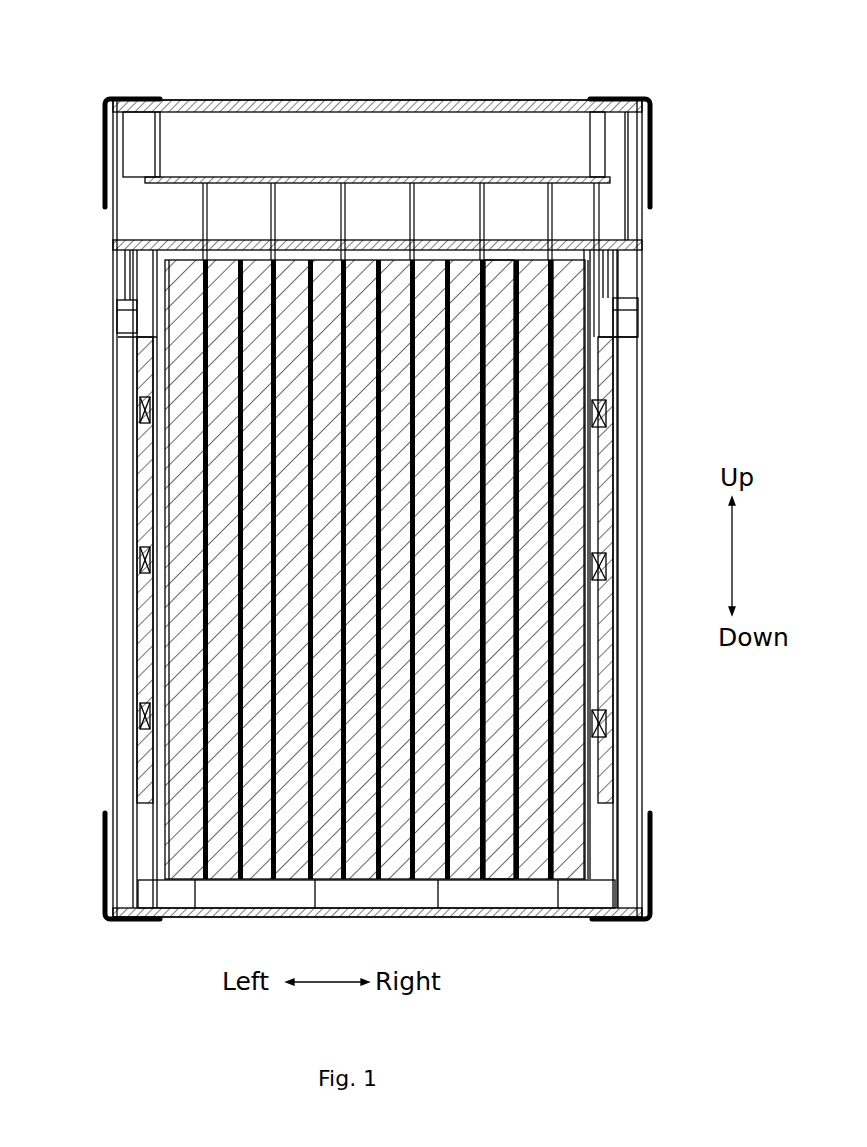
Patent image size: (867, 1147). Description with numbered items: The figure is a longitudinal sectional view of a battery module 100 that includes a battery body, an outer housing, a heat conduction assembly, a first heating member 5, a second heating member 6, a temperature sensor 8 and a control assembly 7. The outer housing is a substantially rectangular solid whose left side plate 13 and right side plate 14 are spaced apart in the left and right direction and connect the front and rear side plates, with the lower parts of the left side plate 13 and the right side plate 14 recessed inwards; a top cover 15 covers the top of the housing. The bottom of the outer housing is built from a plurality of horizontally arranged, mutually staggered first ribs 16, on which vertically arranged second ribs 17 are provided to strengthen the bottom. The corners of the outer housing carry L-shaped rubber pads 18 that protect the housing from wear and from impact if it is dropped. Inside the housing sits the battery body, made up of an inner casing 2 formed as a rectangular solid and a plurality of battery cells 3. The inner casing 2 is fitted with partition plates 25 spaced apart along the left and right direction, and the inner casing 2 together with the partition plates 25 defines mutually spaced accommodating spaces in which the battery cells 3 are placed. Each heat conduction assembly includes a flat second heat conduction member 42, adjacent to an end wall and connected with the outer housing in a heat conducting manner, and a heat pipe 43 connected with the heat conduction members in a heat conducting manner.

The battery module 100 is at (350, 29).
The top cover 15 is at (364, 106).
The control assembly 7 is at (437, 183).
The rubber pad 18 is at (108, 134).
The partition plate 25 is at (205, 388).
The battery cell 3 is at (188, 670).
The first heating member 5 is at (555, 272).
The temperature sensor 8 is at (497, 845).
The left side plate 13 is at (137, 497).
The second heating member 6 is at (148, 527).
The second heat conduction member 42 is at (138, 680).
The right side plate 14 is at (615, 500).
The inner casing 2 is at (613, 347).
The heat pipe 43 is at (143, 413).
The second rib 17 is at (313, 897).
The first rib 16 is at (460, 910).